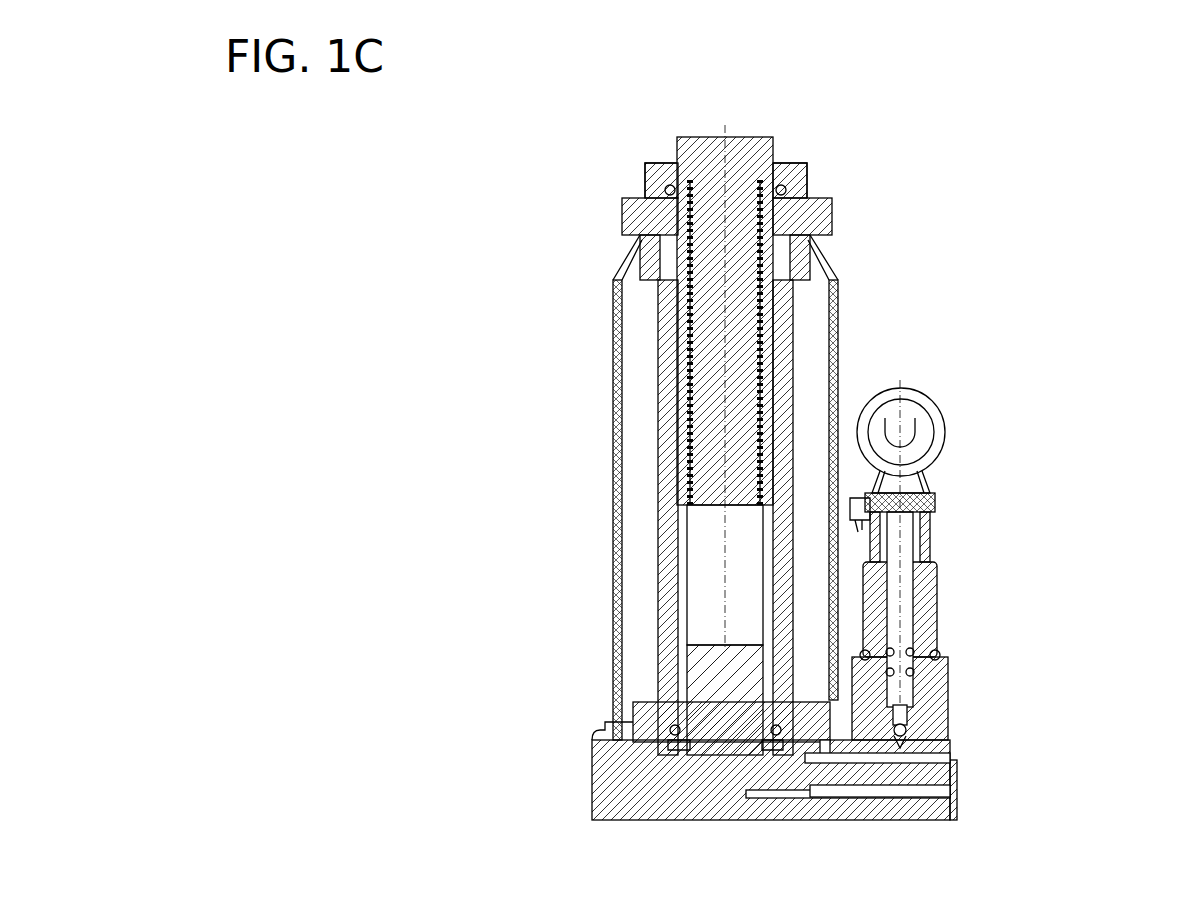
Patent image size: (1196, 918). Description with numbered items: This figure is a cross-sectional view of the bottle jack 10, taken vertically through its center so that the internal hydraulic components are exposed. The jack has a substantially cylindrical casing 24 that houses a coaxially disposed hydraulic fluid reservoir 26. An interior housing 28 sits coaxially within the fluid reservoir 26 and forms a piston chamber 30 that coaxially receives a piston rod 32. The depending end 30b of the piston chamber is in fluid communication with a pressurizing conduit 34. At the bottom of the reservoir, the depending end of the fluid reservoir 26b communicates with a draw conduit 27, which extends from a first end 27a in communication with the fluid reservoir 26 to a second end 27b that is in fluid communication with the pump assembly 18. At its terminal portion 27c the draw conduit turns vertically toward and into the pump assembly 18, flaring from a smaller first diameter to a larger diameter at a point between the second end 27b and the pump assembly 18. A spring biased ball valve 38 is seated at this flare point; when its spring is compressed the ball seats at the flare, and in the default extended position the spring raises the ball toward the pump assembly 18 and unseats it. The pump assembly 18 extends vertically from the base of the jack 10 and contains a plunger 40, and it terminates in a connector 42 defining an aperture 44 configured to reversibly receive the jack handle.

The bottle jack 10 is at (485, 294).
The pump assembly 18 is at (982, 470).
The cylindrical casing 24 is at (613, 400).
The hydraulic fluid reservoir 26 is at (632, 448).
The depending end of the fluid reservoir 26b is at (805, 675).
The draw conduit 27 is at (872, 753).
The first end of the draw conduit 27a is at (826, 758).
The second end of the draw conduit 27b is at (895, 758).
The terminal portion of the draw conduit 27c is at (910, 725).
The interior housing 28 is at (768, 329).
The piston chamber 30 is at (710, 556).
The depending end of the piston chamber 30b is at (737, 757).
The piston rod 32 is at (713, 163).
The pressurizing conduit 34 is at (858, 790).
The spring biased ball valve 38 is at (900, 730).
The plunger 40 is at (902, 572).
The connector 42 is at (935, 405).
The aperture 44 is at (920, 433).